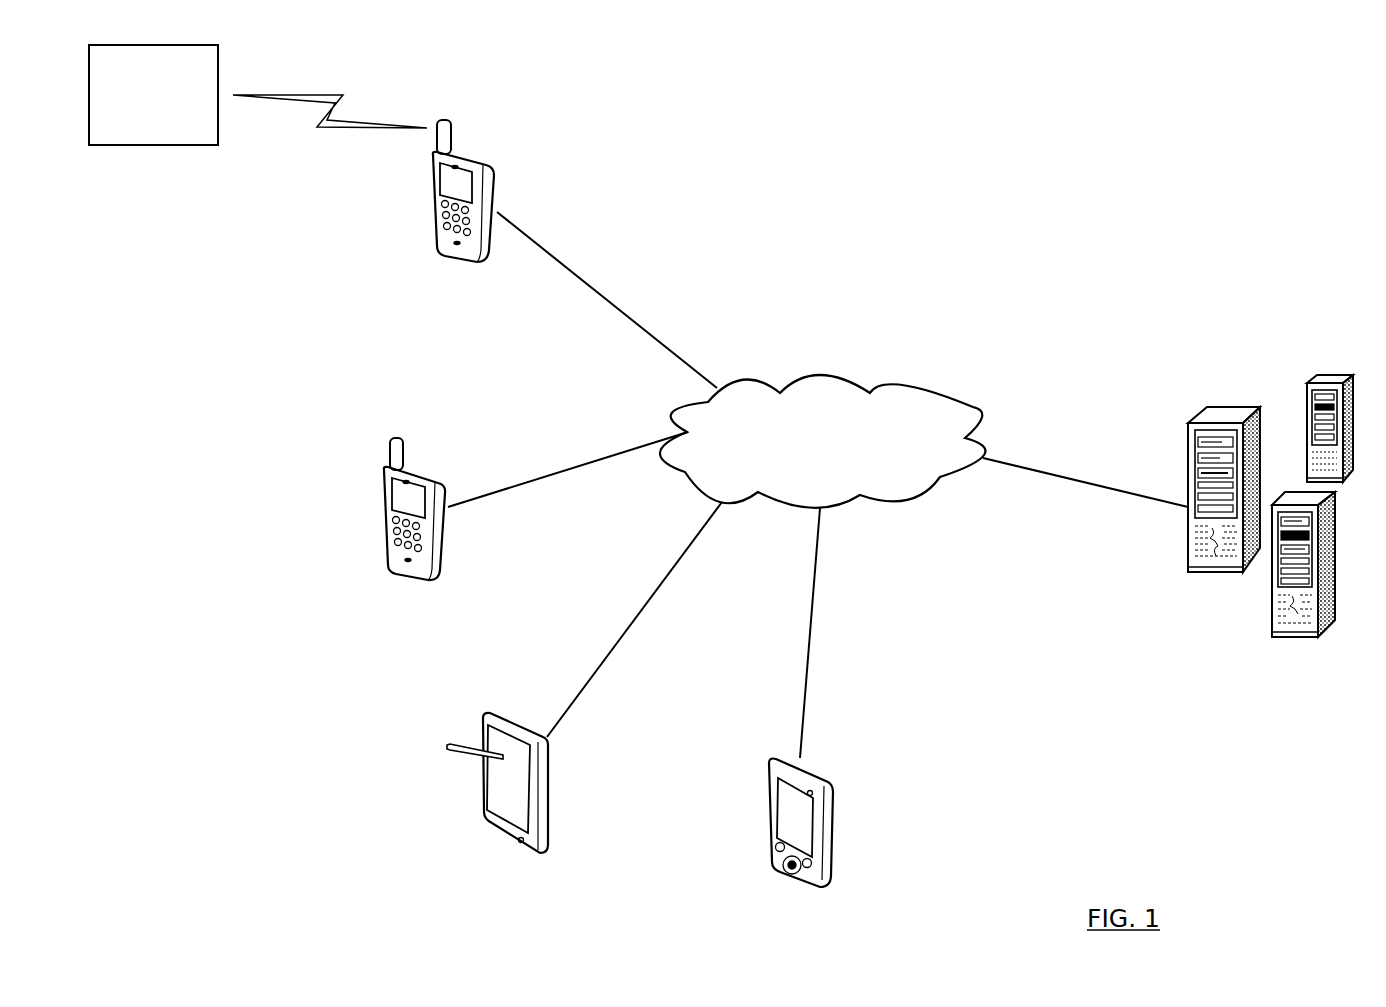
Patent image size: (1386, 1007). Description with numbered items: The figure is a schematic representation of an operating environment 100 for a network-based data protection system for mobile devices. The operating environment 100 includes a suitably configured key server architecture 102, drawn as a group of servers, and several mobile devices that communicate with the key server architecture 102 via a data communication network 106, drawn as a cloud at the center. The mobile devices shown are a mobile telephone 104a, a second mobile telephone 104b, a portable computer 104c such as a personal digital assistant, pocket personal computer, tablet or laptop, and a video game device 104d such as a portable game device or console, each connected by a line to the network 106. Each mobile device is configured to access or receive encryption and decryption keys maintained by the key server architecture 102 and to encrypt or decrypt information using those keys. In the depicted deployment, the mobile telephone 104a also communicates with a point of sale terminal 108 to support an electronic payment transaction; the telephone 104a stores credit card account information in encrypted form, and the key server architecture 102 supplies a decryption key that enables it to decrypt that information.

The operating environment 100 is at (884, 104).
The key server architecture 102 is at (1252, 347).
The mobile telephone 104a is at (463, 142).
The mobile telephone 104b is at (438, 472).
The portable computer 104c is at (487, 710).
The video game device 104d is at (778, 752).
The data communication network 106 is at (973, 405).
The point of sale terminal 108 is at (150, 145).